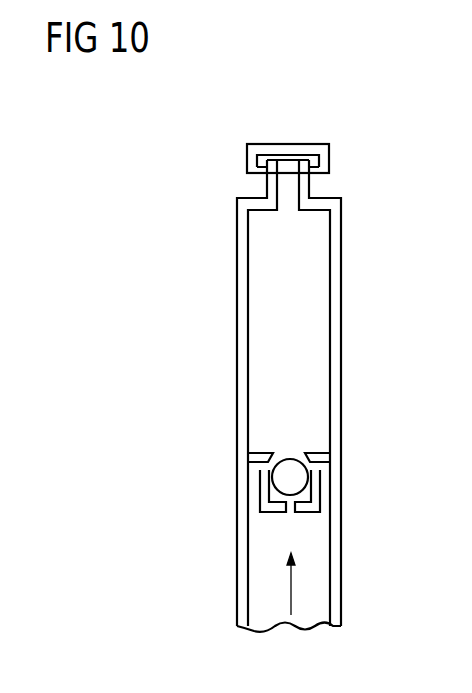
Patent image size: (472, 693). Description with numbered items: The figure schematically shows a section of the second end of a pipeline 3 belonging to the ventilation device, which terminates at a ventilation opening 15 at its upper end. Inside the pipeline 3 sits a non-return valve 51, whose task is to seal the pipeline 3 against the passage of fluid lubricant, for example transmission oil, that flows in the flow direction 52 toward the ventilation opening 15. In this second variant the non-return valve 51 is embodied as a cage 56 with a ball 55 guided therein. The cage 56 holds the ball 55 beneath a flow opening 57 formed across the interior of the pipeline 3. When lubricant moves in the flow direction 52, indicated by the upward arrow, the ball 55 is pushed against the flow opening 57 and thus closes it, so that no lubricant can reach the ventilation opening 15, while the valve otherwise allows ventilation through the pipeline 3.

The ventilation opening 15 is at (285, 143).
The pipeline 3 is at (334, 331).
The non-return valve 51 is at (270, 453).
The ball 55 is at (297, 480).
The cage 56 is at (317, 508).
The flow opening 57 is at (290, 452).
The flow direction 52 is at (291, 591).